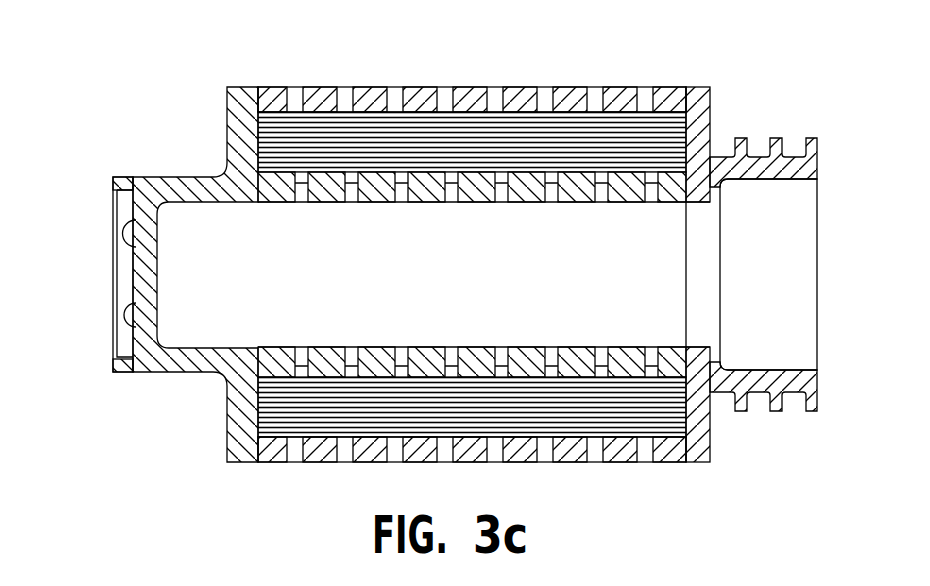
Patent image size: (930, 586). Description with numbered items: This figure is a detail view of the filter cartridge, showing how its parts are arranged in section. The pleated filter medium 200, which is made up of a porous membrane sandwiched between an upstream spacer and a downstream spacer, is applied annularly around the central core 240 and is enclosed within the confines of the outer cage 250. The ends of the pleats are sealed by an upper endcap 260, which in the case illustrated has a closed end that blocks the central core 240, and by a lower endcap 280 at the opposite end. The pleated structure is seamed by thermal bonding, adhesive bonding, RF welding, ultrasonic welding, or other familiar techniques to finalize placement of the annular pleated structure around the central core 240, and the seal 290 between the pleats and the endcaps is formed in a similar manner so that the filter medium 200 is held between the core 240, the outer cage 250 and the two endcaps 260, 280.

The pleated filter medium 200 is at (563, 407).
The central core 240 is at (617, 172).
The outer cage 250 is at (561, 88).
The upper endcap 260 is at (116, 371).
The lower endcap 280 is at (714, 413).
The seal 290 is at (697, 137).